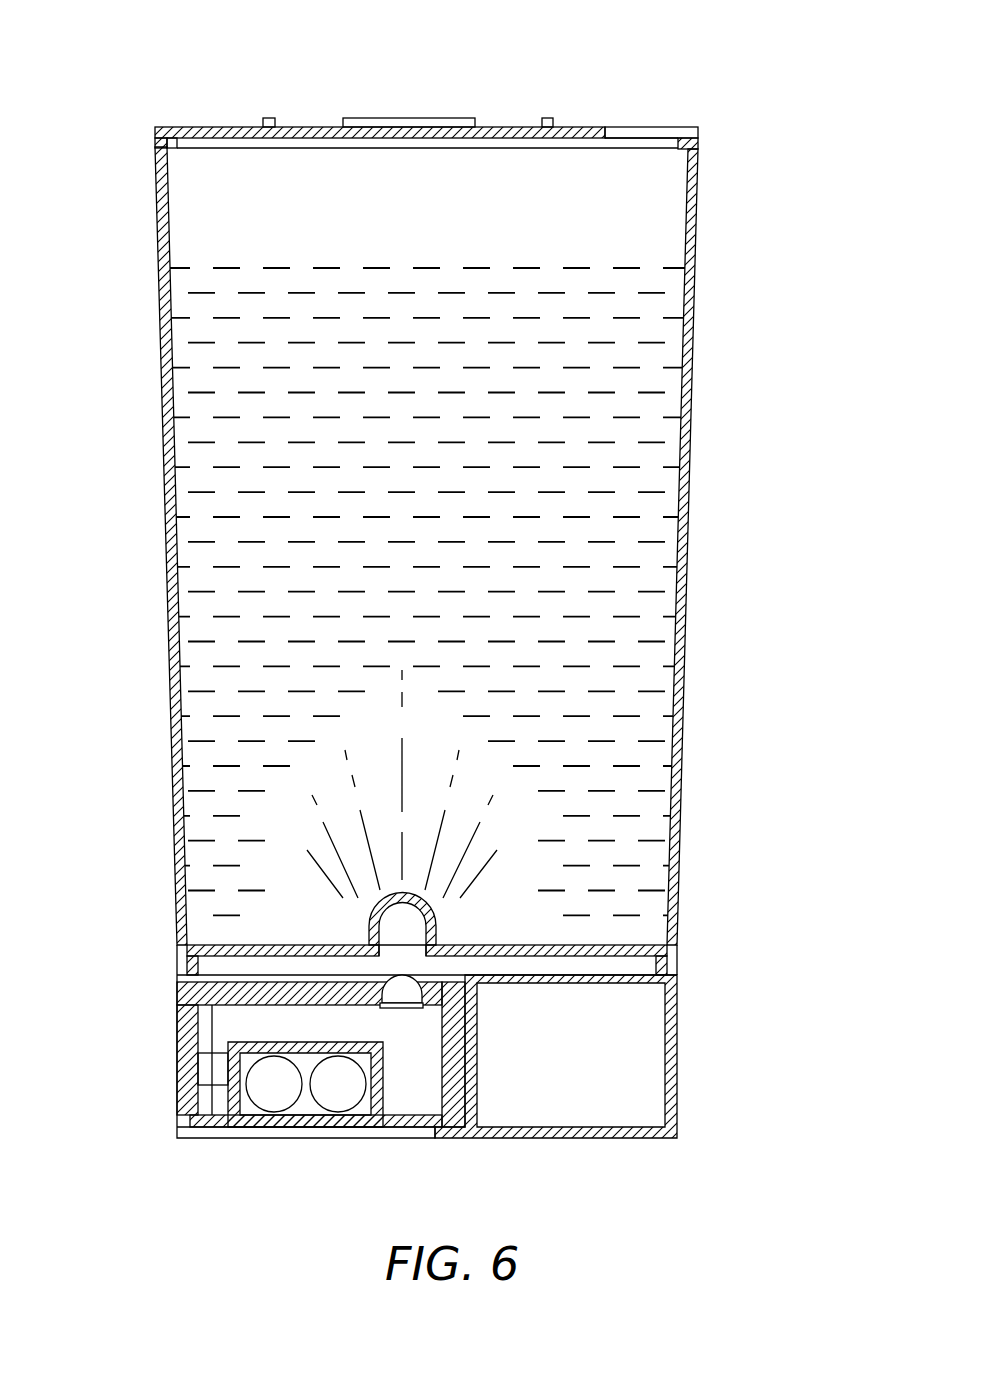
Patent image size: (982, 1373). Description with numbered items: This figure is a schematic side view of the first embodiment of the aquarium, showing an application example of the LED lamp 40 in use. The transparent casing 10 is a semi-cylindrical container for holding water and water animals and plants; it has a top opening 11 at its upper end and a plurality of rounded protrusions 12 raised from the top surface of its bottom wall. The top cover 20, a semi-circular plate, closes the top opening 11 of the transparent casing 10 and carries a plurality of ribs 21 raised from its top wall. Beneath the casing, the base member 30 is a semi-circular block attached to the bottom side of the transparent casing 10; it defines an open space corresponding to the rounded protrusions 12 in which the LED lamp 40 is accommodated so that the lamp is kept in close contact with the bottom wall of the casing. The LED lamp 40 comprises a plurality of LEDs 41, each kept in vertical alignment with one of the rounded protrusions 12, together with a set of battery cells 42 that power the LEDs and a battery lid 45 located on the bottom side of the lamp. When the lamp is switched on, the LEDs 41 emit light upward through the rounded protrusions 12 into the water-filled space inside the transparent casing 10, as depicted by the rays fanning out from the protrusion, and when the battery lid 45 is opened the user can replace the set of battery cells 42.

The transparent casing 10 is at (682, 774).
The top opening 11 is at (667, 140).
The rounded protrusions 12 is at (369, 925).
The top cover 20 is at (212, 127).
The ribs 21 is at (543, 118).
The base member 30 is at (677, 1078).
The LED lamp 40 is at (177, 1040).
The LEDs 41 is at (402, 990).
The set of battery cells 42 is at (270, 1090).
The battery lid 45 is at (317, 1127).